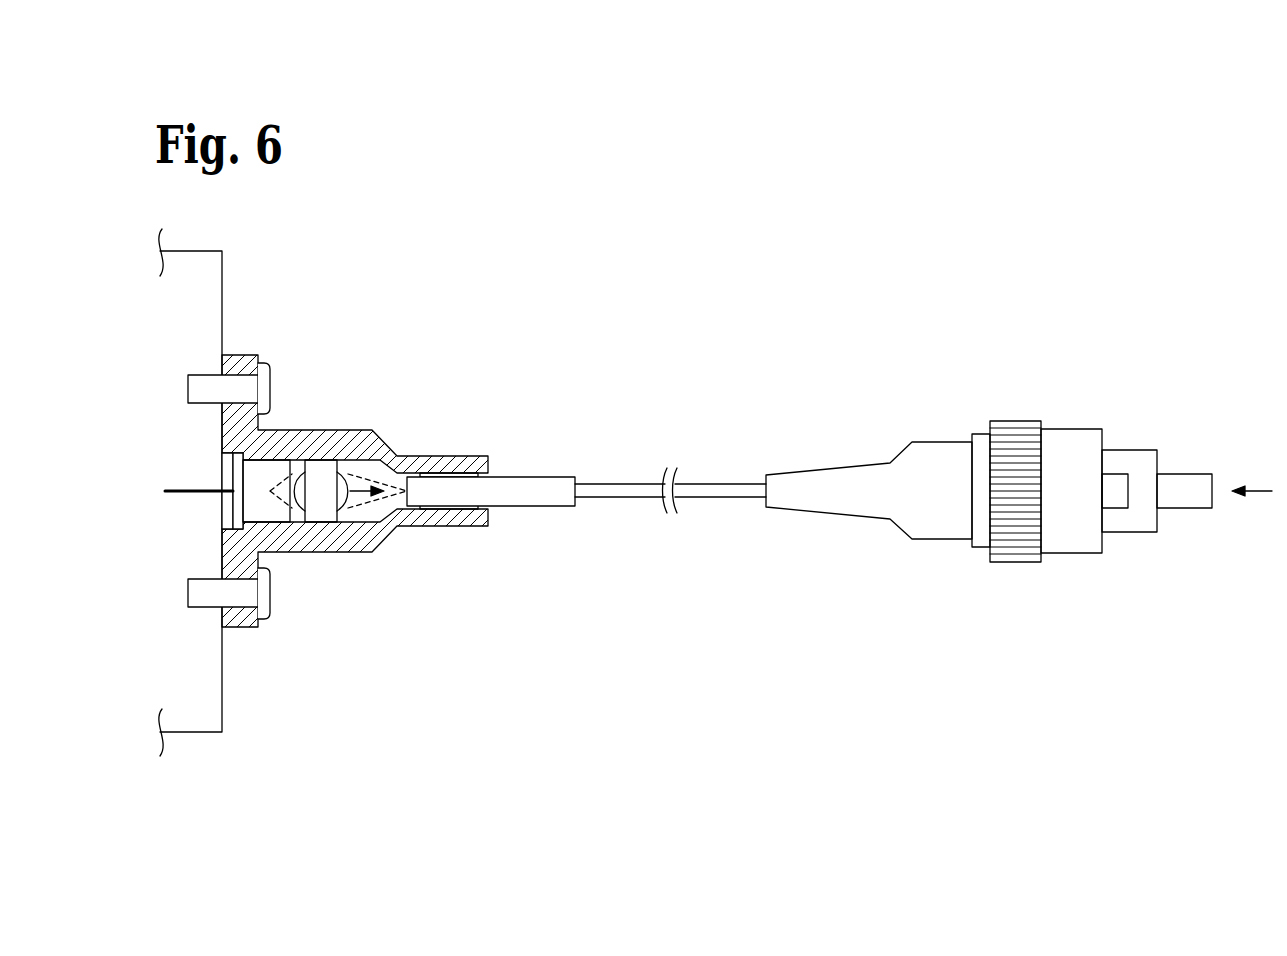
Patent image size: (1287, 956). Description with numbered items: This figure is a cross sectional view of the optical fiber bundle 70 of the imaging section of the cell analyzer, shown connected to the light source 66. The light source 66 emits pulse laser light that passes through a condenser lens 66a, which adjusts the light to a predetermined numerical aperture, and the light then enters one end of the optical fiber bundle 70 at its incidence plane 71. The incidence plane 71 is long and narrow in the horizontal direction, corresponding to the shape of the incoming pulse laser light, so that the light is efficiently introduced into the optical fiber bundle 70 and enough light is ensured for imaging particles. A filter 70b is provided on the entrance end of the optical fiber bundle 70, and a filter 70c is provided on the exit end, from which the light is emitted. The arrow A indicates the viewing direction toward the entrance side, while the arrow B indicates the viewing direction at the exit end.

The light source 66 is at (273, 473).
The condenser lens 66a is at (320, 468).
The A arrow A is at (365, 476).
The incidence plane 71 is at (405, 508).
The optical fiber bundle 70 is at (809, 488).
The filter 70b is at (532, 497).
The filter 70c is at (942, 527).
The B arrow B is at (1255, 476).